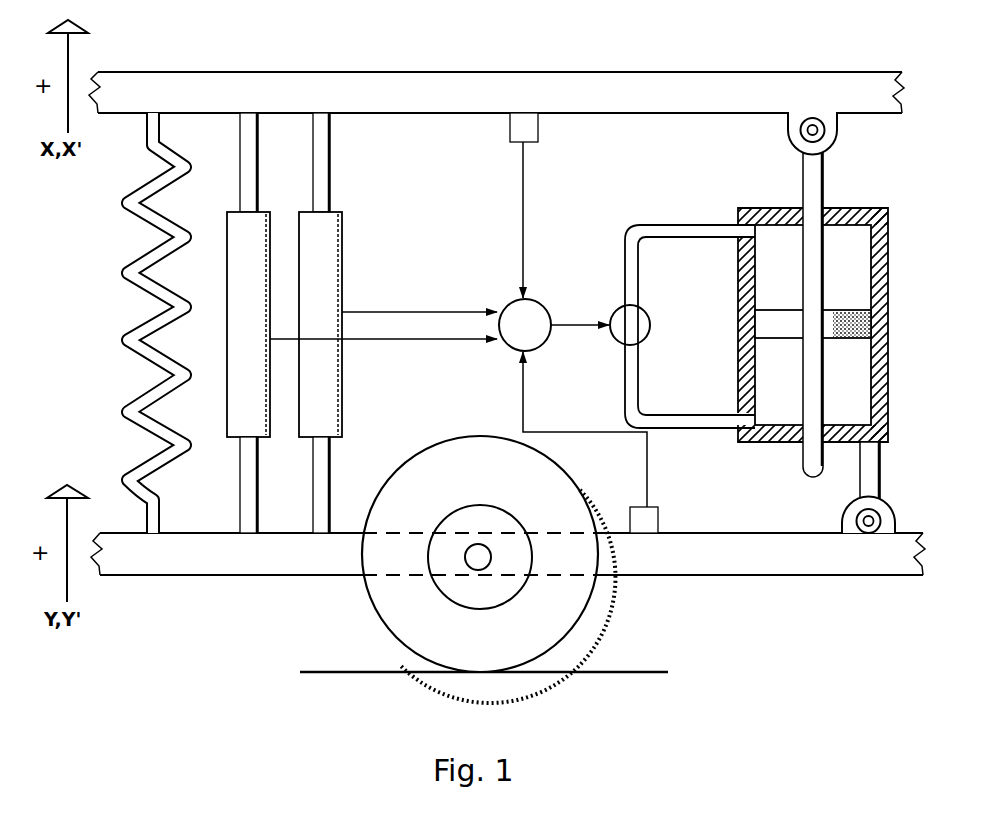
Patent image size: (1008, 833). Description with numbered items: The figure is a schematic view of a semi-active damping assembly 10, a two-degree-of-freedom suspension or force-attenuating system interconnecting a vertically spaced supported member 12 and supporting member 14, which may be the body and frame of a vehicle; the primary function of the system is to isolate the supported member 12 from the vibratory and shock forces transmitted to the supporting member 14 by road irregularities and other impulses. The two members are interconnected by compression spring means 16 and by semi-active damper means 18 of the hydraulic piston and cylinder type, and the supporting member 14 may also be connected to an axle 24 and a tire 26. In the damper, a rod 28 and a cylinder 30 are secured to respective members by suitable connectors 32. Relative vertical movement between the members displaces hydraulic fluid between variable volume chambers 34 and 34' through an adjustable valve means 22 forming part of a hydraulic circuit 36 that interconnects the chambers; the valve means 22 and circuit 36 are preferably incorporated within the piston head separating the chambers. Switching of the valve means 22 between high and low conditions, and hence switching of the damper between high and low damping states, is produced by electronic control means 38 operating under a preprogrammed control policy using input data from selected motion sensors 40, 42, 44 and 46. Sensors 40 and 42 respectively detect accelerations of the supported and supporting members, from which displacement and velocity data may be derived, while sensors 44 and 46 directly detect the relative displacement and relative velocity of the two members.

The semi-active damping assembly 10 is at (222, 45).
The supported member 12 is at (463, 92).
The supporting member 14 is at (711, 555).
The compression spring means 16 is at (125, 343).
The semi-active damper means 18 is at (628, 222).
The adjustable valve means 22 is at (648, 320).
The axle 24 is at (476, 558).
The tire 26 is at (388, 604).
The rod 28 is at (807, 181).
The cylinder 30 is at (890, 233).
The connectors 32 is at (838, 133).
The variable volume chamber 34 is at (813, 298).
The variable volume chamber 34' is at (777, 374).
The hydraulic circuit 36 is at (660, 428).
The electronic control means 38 is at (510, 302).
The motion sensor 40 is at (522, 127).
The motion sensor 42 is at (658, 513).
The motion sensor 44 is at (333, 175).
The motion sensor 46 is at (258, 175).